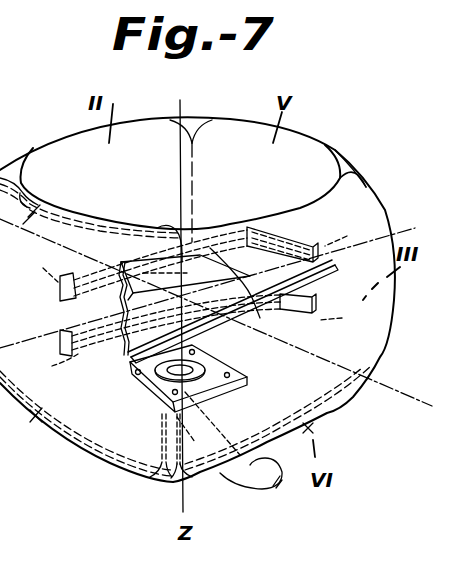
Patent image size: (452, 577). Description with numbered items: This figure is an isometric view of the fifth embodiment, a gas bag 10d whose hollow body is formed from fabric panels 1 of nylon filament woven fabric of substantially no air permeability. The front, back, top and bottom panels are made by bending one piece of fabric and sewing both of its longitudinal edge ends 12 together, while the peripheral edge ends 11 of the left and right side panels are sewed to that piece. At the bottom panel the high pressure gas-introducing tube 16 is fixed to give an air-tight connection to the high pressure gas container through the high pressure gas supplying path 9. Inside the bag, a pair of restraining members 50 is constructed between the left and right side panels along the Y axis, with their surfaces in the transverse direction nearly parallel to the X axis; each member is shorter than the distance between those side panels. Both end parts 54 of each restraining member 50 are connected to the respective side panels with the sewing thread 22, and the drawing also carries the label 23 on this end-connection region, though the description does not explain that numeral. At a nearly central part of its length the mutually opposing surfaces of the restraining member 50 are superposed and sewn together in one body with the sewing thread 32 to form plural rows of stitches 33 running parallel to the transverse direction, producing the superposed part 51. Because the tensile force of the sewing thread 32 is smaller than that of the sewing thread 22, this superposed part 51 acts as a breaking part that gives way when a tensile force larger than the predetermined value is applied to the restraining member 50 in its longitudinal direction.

The panel 1 is at (375, 345).
The high pressure gas supplying path 9 is at (263, 480).
The gas bag 10d is at (364, 186).
The peripheral edge ends 11 is at (40, 197).
The edge ends 12 is at (333, 434).
The high pressure gas-introducing tube 16 is at (202, 373).
The sewing thread 22 is at (95, 358).
The upper rail 23 is at (70, 300).
The sewing thread 32 is at (235, 273).
The rows of stitches 33 is at (120, 264).
The restraining member 50 is at (170, 286).
The superposed part 51 is at (216, 308).
The end parts 54 is at (195, 296).